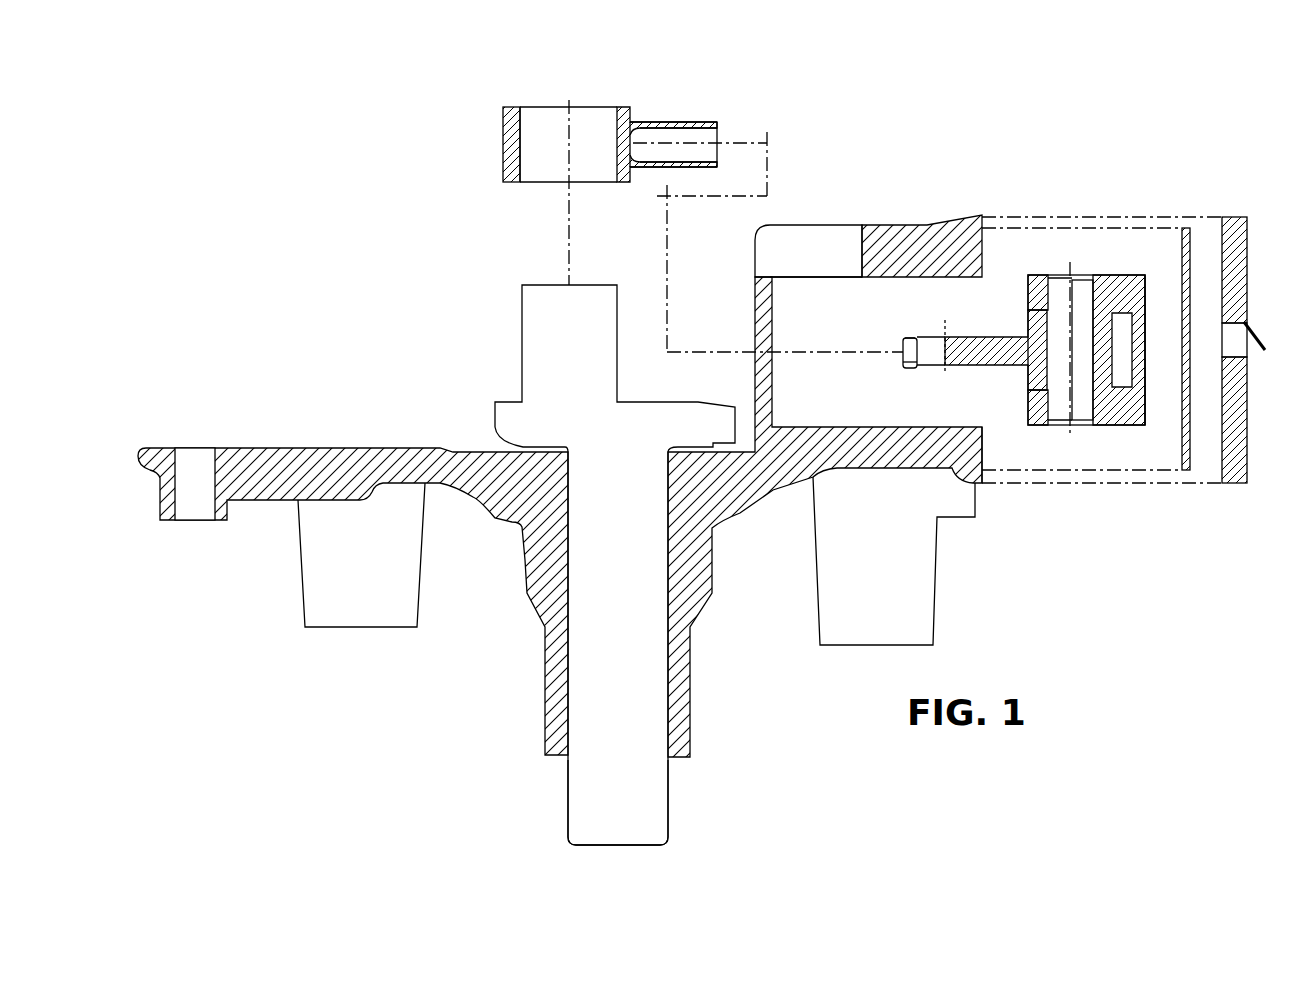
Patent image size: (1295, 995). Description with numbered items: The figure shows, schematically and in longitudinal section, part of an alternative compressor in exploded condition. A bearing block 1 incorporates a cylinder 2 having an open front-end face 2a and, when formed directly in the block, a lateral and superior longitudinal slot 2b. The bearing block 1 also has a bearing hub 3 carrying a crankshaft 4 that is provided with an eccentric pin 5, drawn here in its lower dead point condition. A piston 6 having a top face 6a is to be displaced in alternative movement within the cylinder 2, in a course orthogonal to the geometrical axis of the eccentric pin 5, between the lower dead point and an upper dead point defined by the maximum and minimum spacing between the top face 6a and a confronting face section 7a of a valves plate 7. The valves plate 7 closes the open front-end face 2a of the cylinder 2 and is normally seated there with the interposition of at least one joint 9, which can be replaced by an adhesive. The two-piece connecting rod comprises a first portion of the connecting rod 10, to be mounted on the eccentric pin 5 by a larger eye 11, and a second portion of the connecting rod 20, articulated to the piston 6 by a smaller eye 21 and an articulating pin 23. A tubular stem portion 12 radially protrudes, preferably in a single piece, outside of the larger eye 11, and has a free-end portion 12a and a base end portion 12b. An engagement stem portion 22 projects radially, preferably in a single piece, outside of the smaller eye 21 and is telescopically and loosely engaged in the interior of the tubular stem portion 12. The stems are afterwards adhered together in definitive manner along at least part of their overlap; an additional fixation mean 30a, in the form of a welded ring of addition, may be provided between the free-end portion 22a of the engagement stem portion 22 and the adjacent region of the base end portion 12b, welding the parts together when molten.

The bearing block 1 is at (723, 598).
The cylinder 2 is at (877, 288).
The open front-end face 2a is at (988, 458).
The longitudinal slot 2b is at (842, 250).
The bearing hub 3 is at (573, 585).
The crankshaft 4 is at (568, 813).
The eccentric pin 5 is at (595, 284).
The piston 6 is at (1112, 270).
The top face 6a is at (1149, 397).
The valves plate 7 is at (1239, 212).
The confronting face section 7a is at (1221, 262).
The joint 9 is at (1179, 457).
The first portion of the connecting rod 10 is at (501, 105).
The larger eye 11 is at (528, 166).
The tubular stem portion 12 is at (683, 121).
The free-end portion 12a is at (721, 127).
The base end portion 12b is at (641, 124).
The second portion of the connecting rod 20 is at (1016, 381).
The smaller eye 21 is at (1058, 338).
The engagement stem portion 22 is at (967, 333).
The free-end portion 22a is at (903, 362).
The articulating pin 23 is at (1065, 395).
The fixation mean 30a is at (915, 337).